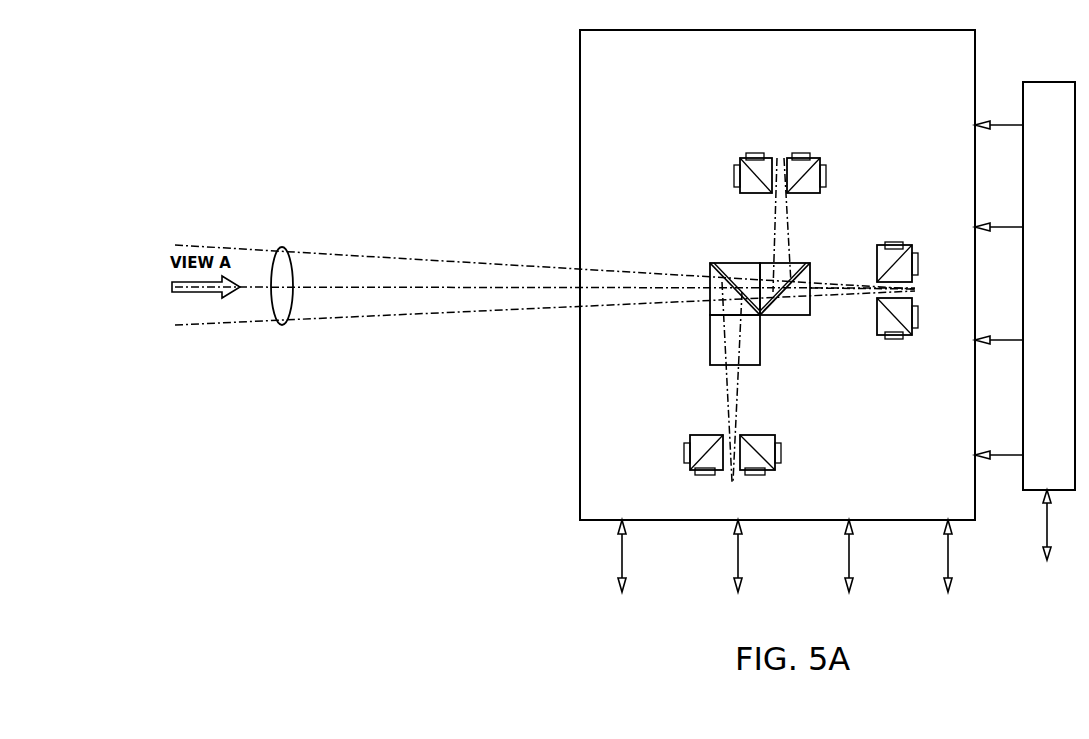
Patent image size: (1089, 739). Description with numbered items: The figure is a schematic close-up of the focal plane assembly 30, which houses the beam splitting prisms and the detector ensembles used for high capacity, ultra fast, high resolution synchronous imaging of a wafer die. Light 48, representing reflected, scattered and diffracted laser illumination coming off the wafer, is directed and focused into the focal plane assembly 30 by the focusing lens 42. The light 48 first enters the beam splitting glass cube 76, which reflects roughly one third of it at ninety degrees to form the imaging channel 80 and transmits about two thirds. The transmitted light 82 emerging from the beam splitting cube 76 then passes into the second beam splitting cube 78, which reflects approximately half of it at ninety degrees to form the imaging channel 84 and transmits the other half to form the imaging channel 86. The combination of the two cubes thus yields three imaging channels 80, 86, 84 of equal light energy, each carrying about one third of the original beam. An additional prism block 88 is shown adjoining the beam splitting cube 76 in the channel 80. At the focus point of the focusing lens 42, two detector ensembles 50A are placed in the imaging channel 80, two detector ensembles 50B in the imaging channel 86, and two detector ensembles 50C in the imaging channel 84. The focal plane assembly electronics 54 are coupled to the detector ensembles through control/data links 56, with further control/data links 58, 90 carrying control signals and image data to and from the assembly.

The focal plane assembly 30 is at (580, 105).
The focusing lens 42 is at (286, 252).
The light 48 is at (395, 253).
The detector ensembles 50A is at (732, 472).
The detector ensembles 50B is at (912, 298).
The detector ensembles 50C is at (770, 160).
The focal plane assembly electronics 54 is at (1048, 82).
The control/data links 56 is at (1010, 127).
The control/data link 58 is at (1044, 527).
The beam splitting glass cube 76 is at (722, 268).
The second beam splitting cube 78 is at (785, 310).
The imaging channel 80 is at (732, 398).
The transmitted light 82 is at (752, 276).
The imaging channel 84 is at (786, 230).
The imaging channel 86 is at (828, 292).
The prism block 88 is at (712, 340).
The control/data links 90 is at (621, 556).